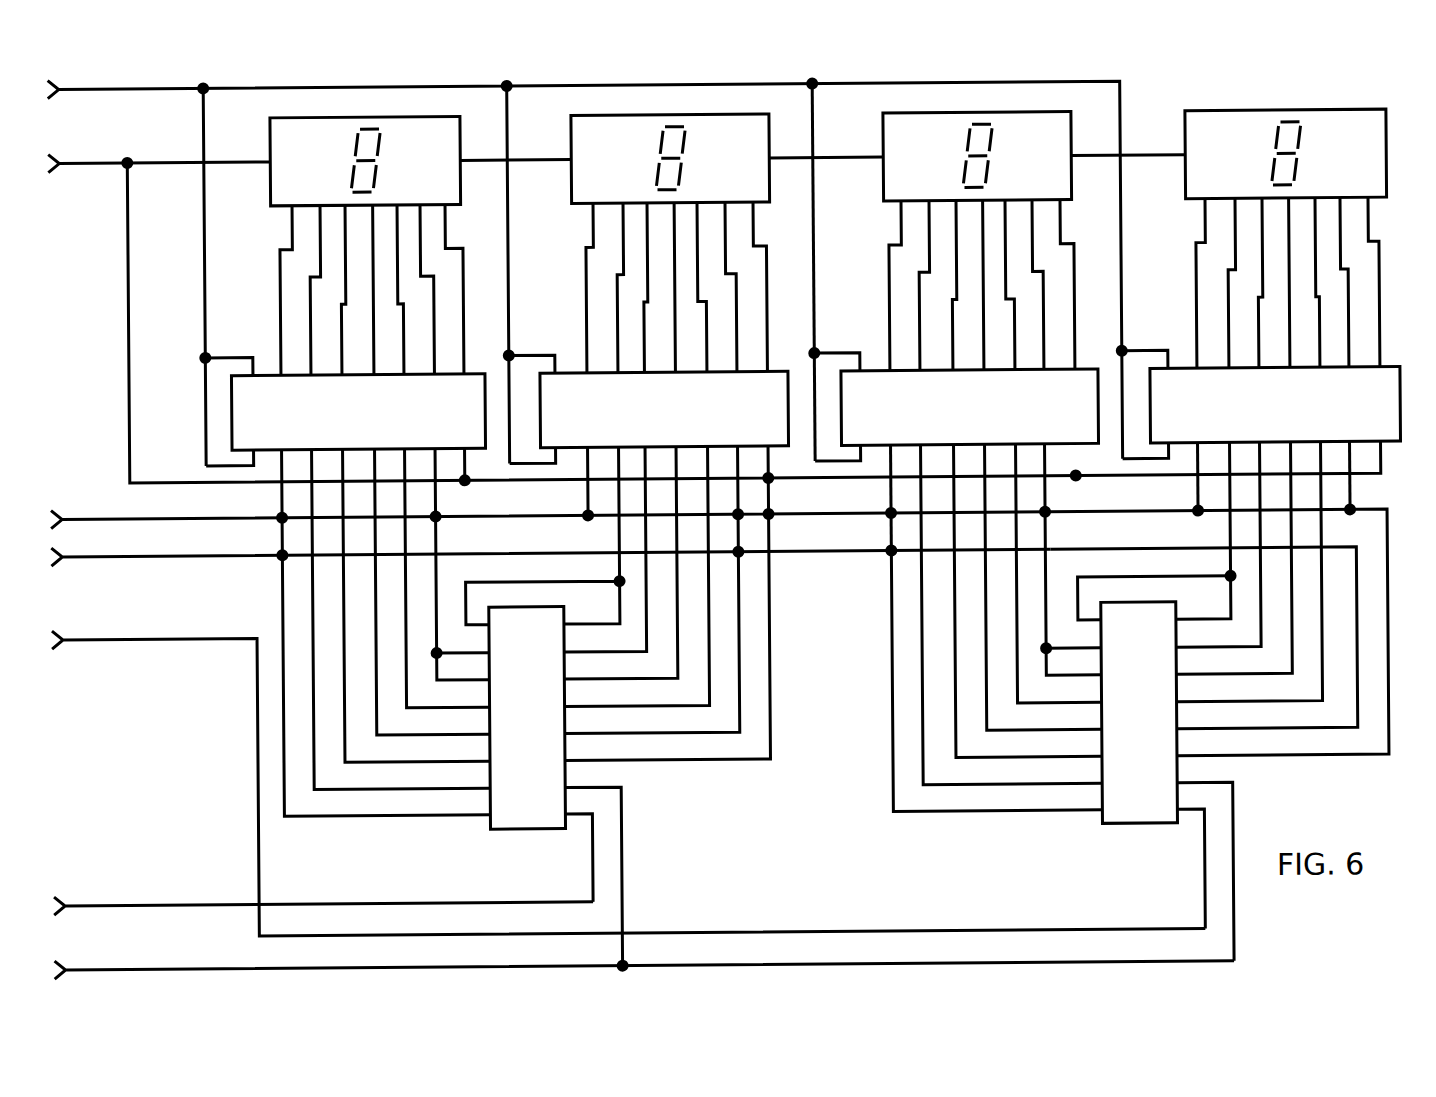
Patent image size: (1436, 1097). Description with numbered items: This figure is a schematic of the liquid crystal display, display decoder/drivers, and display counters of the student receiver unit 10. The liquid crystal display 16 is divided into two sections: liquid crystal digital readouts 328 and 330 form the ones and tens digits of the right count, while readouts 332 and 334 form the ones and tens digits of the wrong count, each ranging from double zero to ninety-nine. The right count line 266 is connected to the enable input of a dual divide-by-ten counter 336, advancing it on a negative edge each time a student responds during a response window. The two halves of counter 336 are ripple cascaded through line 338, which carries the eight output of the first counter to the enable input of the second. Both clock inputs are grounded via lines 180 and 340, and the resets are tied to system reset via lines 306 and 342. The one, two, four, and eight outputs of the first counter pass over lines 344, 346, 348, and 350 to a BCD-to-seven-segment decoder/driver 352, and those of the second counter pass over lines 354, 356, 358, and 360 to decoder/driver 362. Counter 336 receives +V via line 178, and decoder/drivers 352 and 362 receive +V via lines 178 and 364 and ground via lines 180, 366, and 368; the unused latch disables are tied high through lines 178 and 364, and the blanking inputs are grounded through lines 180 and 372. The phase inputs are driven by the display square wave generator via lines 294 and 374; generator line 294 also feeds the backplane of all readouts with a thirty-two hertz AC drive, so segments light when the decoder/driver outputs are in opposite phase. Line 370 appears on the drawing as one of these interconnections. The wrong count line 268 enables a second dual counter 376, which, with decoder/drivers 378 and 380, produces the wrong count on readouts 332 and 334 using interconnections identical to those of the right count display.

The student receiver unit 10 is at (88, 266).
The liquid crystal display 16 is at (1302, 96).
The +V line 178 is at (80, 93).
The generator line 294 is at (79, 164).
The line 374 is at (129, 273).
The line 364 is at (814, 292).
The liquid crystal digital readout 334 is at (276, 211).
The liquid crystal digital readout 332 is at (577, 211).
The liquid crystal digital readout 330 is at (888, 211).
The liquid crystal digital readout 328 is at (1191, 211).
The decoder/driver 380 is at (264, 376).
The decoder/driver 378 is at (567, 376).
The decoder/driver 362 is at (872, 376).
The decoder/driver 352 is at (1180, 376).
The ground line 180 is at (92, 519).
The reset line 306 is at (92, 557).
The ground line 340 is at (1043, 556).
The right count line 266 is at (92, 639).
The wrong count line 268 is at (93, 905).
The line 372 is at (884, 510).
The reset line 342 is at (1016, 818).
The ground line 368 is at (1041, 492).
The line 370 is at (1191, 513).
The ground line 366 is at (1347, 488).
The line 338 is at (1125, 584).
The line 350 is at (1221, 610).
The line 348 is at (1251, 654).
The line 346 is at (1251, 682).
The line 344 is at (1251, 709).
The line 354 is at (1013, 710).
The line 356 is at (1013, 737).
The line 358 is at (1013, 764).
The line 360 is at (1016, 791).
The dual divide-by-10 counter 376 is at (522, 834).
The dual divide-by-10 counter 336 is at (1133, 834).